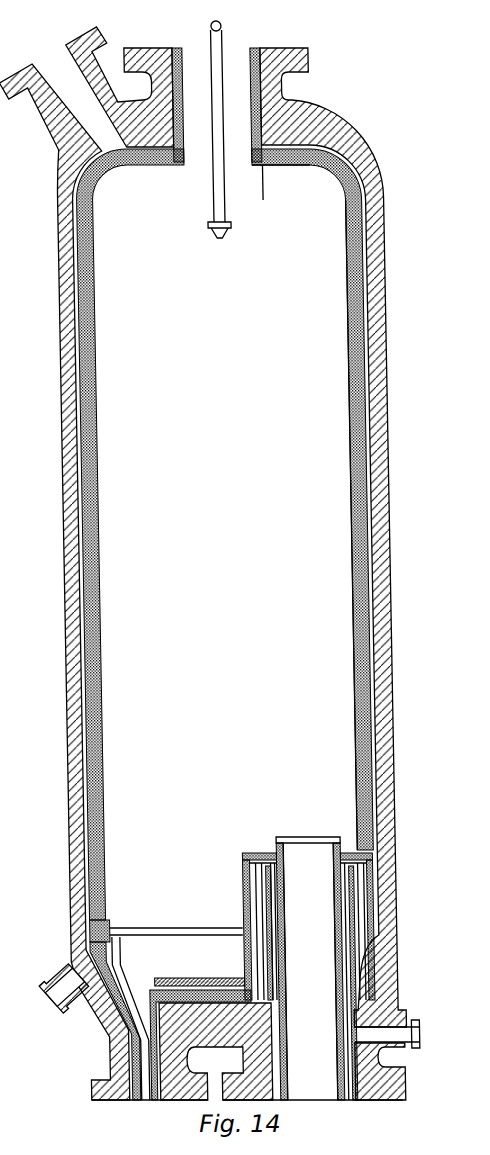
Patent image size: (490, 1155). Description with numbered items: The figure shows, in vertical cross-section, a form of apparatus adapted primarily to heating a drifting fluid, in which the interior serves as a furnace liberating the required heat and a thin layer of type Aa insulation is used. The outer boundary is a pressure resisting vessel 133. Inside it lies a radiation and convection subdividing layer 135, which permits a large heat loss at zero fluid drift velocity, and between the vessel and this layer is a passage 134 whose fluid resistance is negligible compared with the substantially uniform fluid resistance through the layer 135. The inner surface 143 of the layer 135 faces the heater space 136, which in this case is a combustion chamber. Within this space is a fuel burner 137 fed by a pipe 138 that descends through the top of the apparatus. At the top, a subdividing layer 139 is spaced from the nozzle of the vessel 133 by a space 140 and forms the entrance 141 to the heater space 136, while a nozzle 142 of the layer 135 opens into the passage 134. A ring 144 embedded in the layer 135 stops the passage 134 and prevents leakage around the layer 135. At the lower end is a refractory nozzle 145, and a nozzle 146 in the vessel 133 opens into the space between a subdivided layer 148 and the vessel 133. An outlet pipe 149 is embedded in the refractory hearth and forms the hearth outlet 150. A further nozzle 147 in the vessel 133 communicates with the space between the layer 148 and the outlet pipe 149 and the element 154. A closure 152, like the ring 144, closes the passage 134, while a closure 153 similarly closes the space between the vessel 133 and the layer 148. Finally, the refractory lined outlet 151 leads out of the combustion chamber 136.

The pressure resisting vessel 133 is at (377, 256).
The passage 134 is at (360, 292).
The radiation and convection subdividing layer 135 is at (364, 322).
The heater space 136 is at (268, 382).
The fuel burner 137 is at (223, 232).
The pipe 138 is at (232, 27).
The subdividing layer 139 is at (265, 48).
The space 140 is at (315, 35).
The entrance 141 is at (201, 57).
The nozzle 142 is at (62, 72).
The inner surface 143 is at (98, 465).
The ring 144 is at (102, 920).
The refractory nozzle 145 is at (268, 845).
The nozzle 146 is at (42, 990).
The nozzle 147 is at (416, 1020).
The subdivided layer 148 is at (125, 1102).
The outlet pipe 149 is at (134, 1102).
The hearth outlet 150 is at (144, 1104).
The refractory lined outlet 151 is at (304, 1088).
The closure 152 is at (367, 855).
The closure 153 is at (372, 932).
The element 154 is at (160, 985).